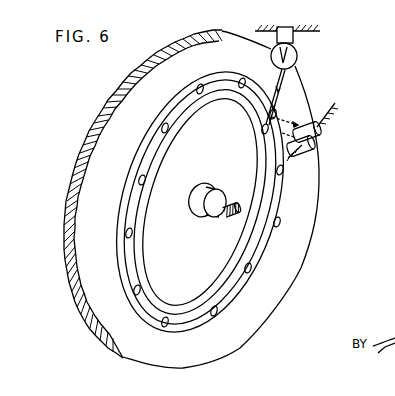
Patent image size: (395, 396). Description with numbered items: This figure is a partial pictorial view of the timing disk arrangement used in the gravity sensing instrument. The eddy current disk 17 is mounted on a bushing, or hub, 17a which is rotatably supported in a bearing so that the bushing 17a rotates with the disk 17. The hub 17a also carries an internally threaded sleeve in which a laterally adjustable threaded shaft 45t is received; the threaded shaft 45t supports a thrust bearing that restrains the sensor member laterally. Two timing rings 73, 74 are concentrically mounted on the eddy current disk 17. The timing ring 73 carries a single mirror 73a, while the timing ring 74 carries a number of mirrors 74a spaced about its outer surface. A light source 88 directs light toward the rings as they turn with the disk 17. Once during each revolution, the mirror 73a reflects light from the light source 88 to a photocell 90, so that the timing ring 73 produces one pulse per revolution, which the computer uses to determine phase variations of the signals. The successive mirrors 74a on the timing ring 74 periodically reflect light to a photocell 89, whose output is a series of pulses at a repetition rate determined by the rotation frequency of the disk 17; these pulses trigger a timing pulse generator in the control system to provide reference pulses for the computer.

The eddy current disk 17 is at (302, 275).
The bushing 17a is at (204, 211).
The threaded shaft 45t is at (231, 220).
The timing ring 73 is at (146, 285).
The mirror 73a is at (262, 130).
The timing ring 74 is at (234, 294).
The mirrors 74a is at (201, 84).
The light source 88 is at (298, 57).
The photocell 89 is at (322, 128).
The photocell 90 is at (321, 148).